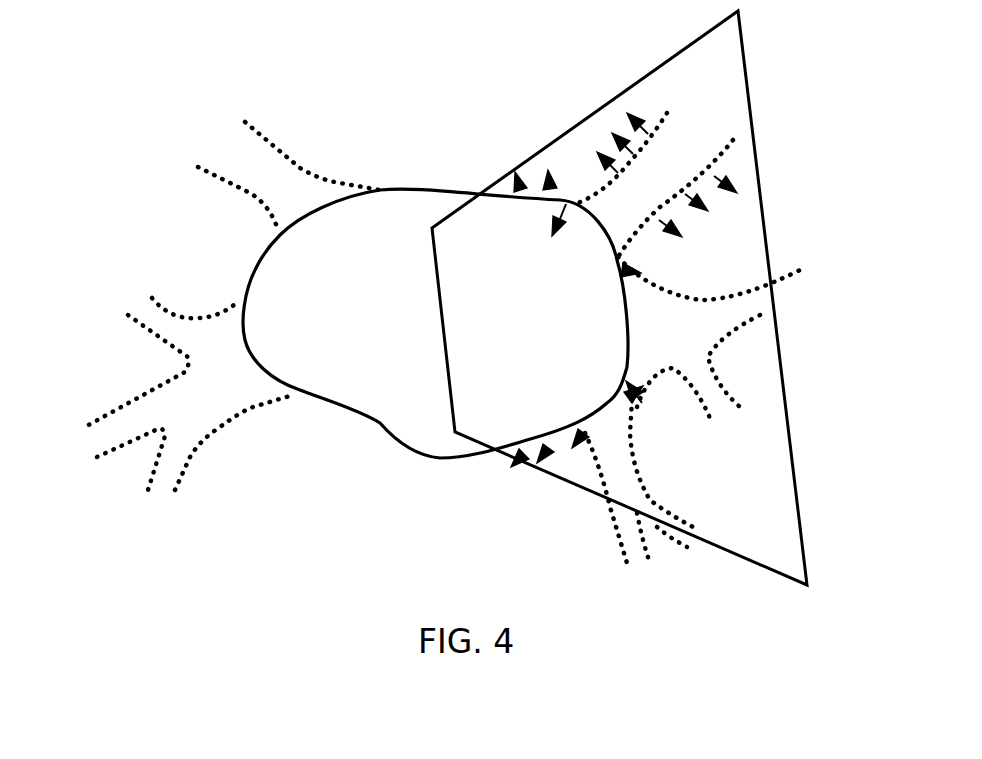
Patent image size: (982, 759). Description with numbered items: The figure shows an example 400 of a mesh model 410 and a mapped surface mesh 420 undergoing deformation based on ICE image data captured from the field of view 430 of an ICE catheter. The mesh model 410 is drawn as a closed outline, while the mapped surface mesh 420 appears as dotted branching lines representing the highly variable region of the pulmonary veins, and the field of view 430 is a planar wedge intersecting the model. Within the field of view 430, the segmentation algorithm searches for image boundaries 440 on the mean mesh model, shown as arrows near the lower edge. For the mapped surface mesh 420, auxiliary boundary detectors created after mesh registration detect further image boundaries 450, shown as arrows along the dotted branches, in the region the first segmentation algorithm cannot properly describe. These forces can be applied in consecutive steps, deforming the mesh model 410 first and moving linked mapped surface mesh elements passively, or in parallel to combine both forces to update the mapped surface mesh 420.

The example 400 is at (198, 548).
The mesh model 410 is at (318, 207).
The mapped surface mesh 420 is at (294, 165).
The field of view 430 is at (762, 218).
The image boundaries 440 is at (522, 461).
The further image boundaries 450 is at (632, 116).